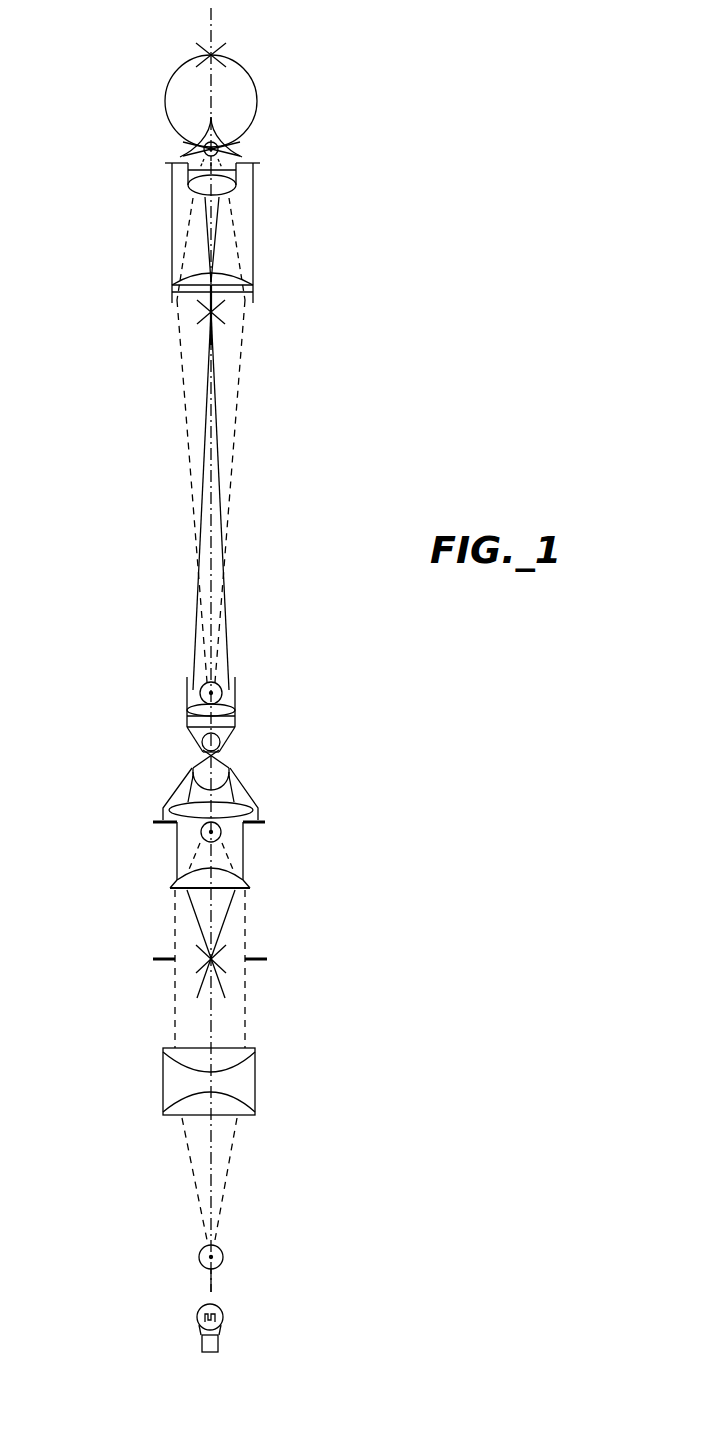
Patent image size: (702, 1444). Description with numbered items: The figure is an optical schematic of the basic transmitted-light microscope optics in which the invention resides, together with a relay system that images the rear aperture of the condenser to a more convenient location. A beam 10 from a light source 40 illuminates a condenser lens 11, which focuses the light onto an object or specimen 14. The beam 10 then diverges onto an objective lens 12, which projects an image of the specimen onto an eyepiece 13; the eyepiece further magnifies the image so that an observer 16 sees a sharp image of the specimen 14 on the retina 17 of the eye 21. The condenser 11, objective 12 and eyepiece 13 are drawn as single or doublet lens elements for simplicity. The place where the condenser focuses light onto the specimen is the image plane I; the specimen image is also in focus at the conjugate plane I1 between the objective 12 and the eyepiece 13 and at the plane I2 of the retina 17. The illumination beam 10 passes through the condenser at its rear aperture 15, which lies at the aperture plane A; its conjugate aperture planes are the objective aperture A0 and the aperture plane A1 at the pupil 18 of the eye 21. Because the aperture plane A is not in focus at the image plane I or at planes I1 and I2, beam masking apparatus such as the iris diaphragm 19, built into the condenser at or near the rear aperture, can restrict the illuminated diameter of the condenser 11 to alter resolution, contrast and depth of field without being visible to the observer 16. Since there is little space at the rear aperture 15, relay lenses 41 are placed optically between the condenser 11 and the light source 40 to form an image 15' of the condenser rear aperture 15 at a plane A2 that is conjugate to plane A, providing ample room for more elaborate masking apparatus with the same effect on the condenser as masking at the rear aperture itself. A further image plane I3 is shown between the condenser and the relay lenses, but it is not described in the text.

The beam 10 is at (178, 868).
The condenser lens 11 is at (163, 813).
The objective lens 12 is at (187, 713).
The eyepiece 13 is at (172, 188).
The object (specimen) 14 is at (208, 757).
The rear aperture of the condenser 15 is at (155, 844).
The image of the condenser rear aperture 15' is at (167, 1234).
The observer 16 is at (167, 103).
The retina 17 is at (212, 55).
The pupil 18 is at (204, 151).
The iris diaphragm 19 is at (155, 822).
The eye 21 is at (257, 103).
The light source 40 is at (200, 1307).
The relay lenses 41 is at (277, 862).
The image plane (specimen plane) I is at (213, 757).
The conjugate image plane I1 is at (220, 313).
The conjugate image plane I2 is at (212, 55).
The third image plane I3 is at (165, 960).
The aperture plane A is at (222, 832).
The objective aperture A0 is at (216, 684).
The aperture plane A1 is at (222, 151).
The conjugate aperture plane A2 is at (216, 1247).